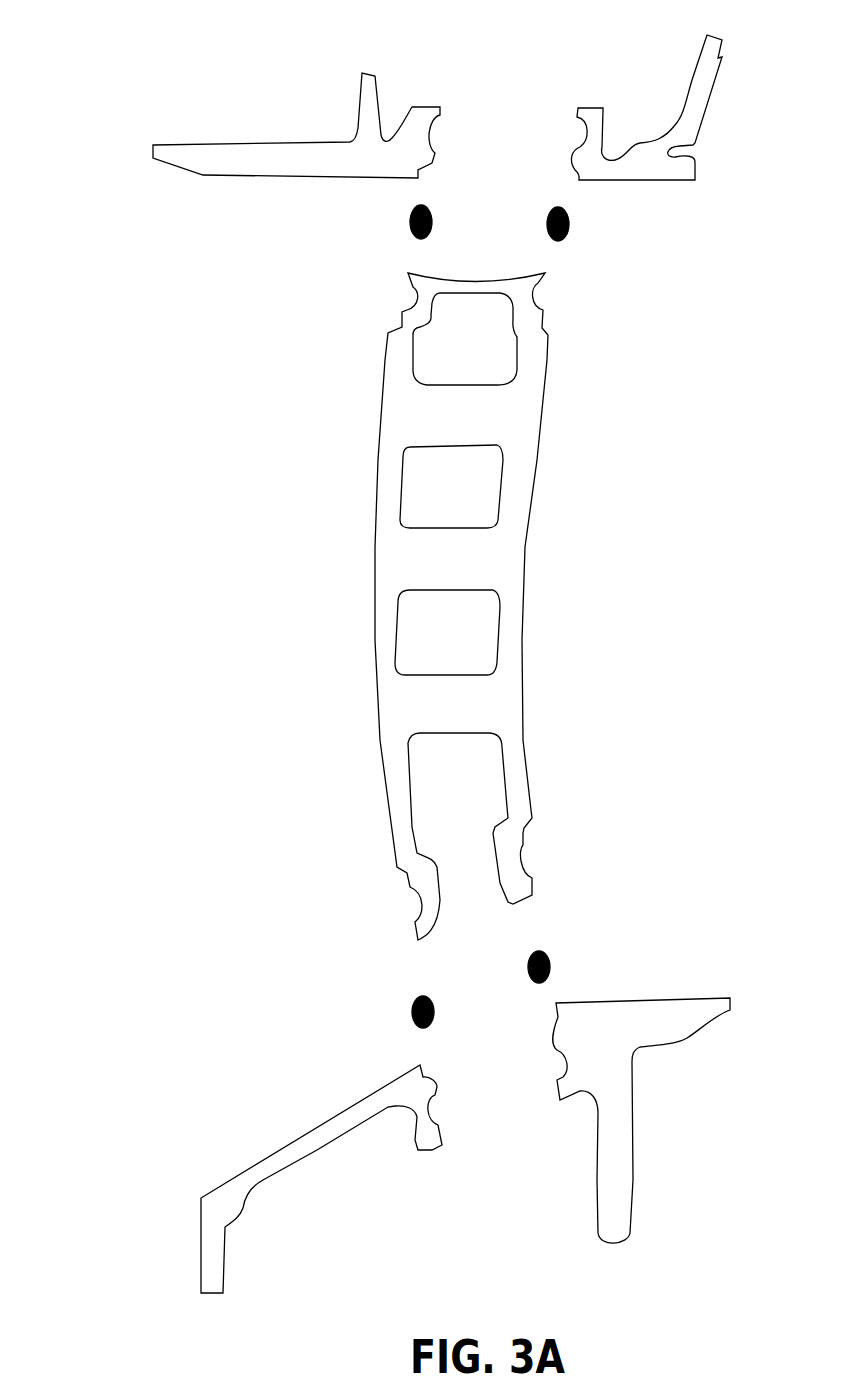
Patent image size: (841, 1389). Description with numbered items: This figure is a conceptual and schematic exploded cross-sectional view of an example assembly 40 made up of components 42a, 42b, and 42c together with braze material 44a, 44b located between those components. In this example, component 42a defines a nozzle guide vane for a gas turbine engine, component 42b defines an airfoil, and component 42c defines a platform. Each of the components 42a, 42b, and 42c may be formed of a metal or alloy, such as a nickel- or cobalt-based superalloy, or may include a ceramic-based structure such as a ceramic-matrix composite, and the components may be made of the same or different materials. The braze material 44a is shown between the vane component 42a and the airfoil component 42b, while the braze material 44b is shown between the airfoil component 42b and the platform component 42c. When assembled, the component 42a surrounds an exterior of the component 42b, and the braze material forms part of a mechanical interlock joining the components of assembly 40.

The assembly 40 is at (106, 36).
The component 42a is at (153, 152).
The component 42b is at (377, 457).
The component 42c is at (222, 1187).
The braze material 44a is at (408, 222).
The braze material 44b is at (410, 1012).